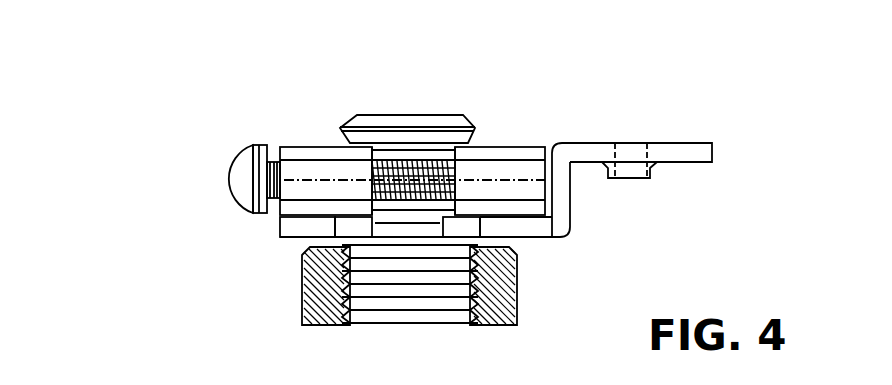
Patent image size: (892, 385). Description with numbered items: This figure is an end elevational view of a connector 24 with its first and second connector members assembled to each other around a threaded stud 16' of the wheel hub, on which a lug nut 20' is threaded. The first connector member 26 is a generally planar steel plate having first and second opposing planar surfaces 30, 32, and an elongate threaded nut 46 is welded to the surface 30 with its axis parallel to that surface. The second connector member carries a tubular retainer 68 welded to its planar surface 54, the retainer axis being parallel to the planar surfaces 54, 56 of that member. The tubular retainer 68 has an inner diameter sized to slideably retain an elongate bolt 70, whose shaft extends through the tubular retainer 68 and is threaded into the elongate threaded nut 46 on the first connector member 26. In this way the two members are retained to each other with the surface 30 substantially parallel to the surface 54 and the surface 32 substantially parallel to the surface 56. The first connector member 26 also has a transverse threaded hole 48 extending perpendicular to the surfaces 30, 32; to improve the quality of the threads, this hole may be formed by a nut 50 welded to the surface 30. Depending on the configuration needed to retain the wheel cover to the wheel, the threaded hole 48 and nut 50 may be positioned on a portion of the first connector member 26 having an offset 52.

The elongate bolt 70 is at (228, 180).
The connector 24 is at (250, 132).
The tubular retainer 68 is at (310, 147).
The stud 16' is at (391, 132).
The elongate threaded nut 46 is at (503, 147).
The planar surface 54 is at (270, 139).
The first planar surface 30 is at (508, 215).
The planar surface 56 is at (342, 255).
The first connector member 26 is at (700, 132).
The offset 52 is at (572, 192).
The second planar surface 32 is at (538, 238).
The transverse threaded hole 48 is at (616, 143).
The nut 50 is at (655, 177).
The lug nut 20' is at (348, 293).